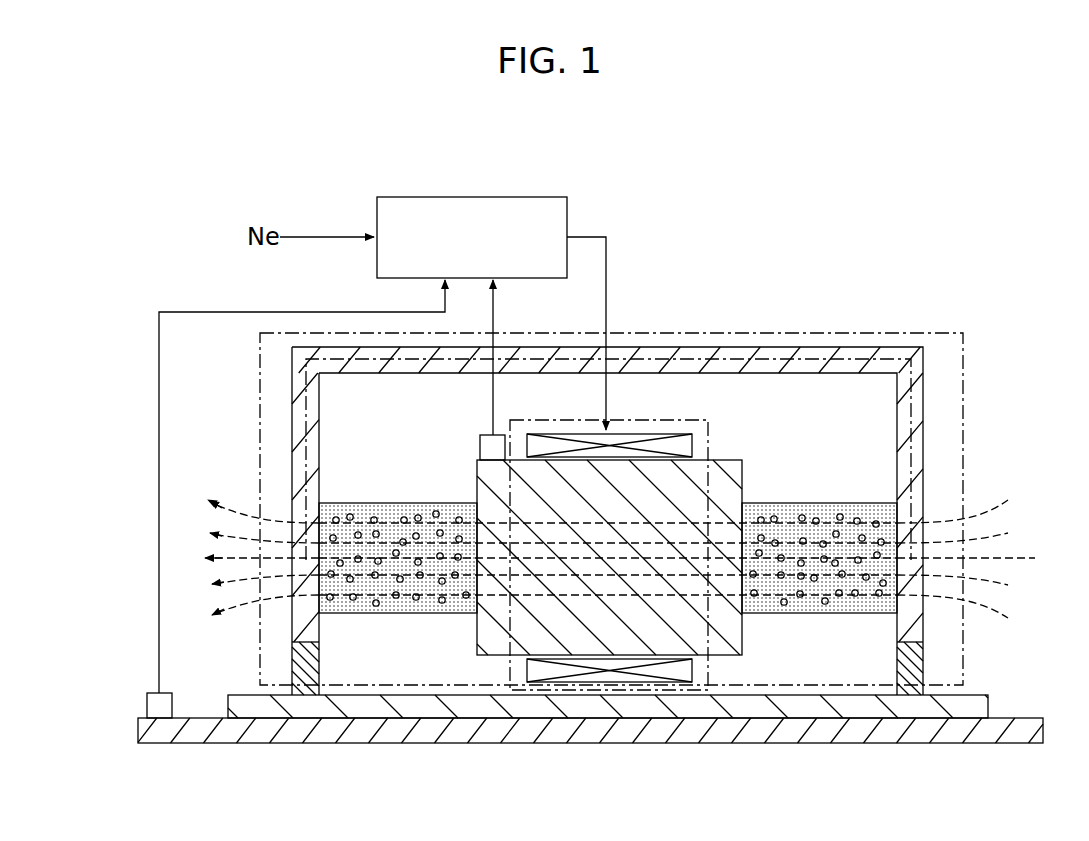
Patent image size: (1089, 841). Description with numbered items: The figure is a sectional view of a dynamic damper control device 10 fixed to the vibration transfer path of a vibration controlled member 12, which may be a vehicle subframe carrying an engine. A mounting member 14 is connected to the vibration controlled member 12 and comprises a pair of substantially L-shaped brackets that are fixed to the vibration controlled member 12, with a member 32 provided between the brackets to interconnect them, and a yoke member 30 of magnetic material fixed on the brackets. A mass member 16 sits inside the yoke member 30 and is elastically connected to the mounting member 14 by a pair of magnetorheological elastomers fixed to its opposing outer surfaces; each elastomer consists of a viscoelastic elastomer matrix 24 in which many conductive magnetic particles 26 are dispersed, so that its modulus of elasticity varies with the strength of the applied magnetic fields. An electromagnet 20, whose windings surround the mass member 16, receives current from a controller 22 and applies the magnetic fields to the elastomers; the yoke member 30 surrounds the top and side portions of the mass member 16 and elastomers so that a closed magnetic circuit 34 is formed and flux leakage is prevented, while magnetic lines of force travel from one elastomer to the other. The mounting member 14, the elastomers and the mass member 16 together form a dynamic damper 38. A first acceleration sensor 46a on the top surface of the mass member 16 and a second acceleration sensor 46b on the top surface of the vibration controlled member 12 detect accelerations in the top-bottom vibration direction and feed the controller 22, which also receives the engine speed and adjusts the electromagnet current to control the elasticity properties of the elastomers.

The dynamic damper control device 10 is at (420, 117).
The vibration controlled member 12 is at (250, 745).
The mounting member 14 is at (614, 480).
The mass member 16 is at (745, 460).
The electromagnet 20 is at (662, 447).
The controller 22 is at (538, 197).
The elastomer matrix 24 is at (398, 520).
The magnetic particles 26 is at (404, 508).
The yoke member 30 is at (728, 352).
The member 32 is at (808, 705).
The closed magnetic circuit 34 is at (675, 359).
The dynamic damper 38 is at (893, 333).
The first acceleration sensor 46a is at (505, 433).
The second acceleration sensor 46b is at (147, 700).